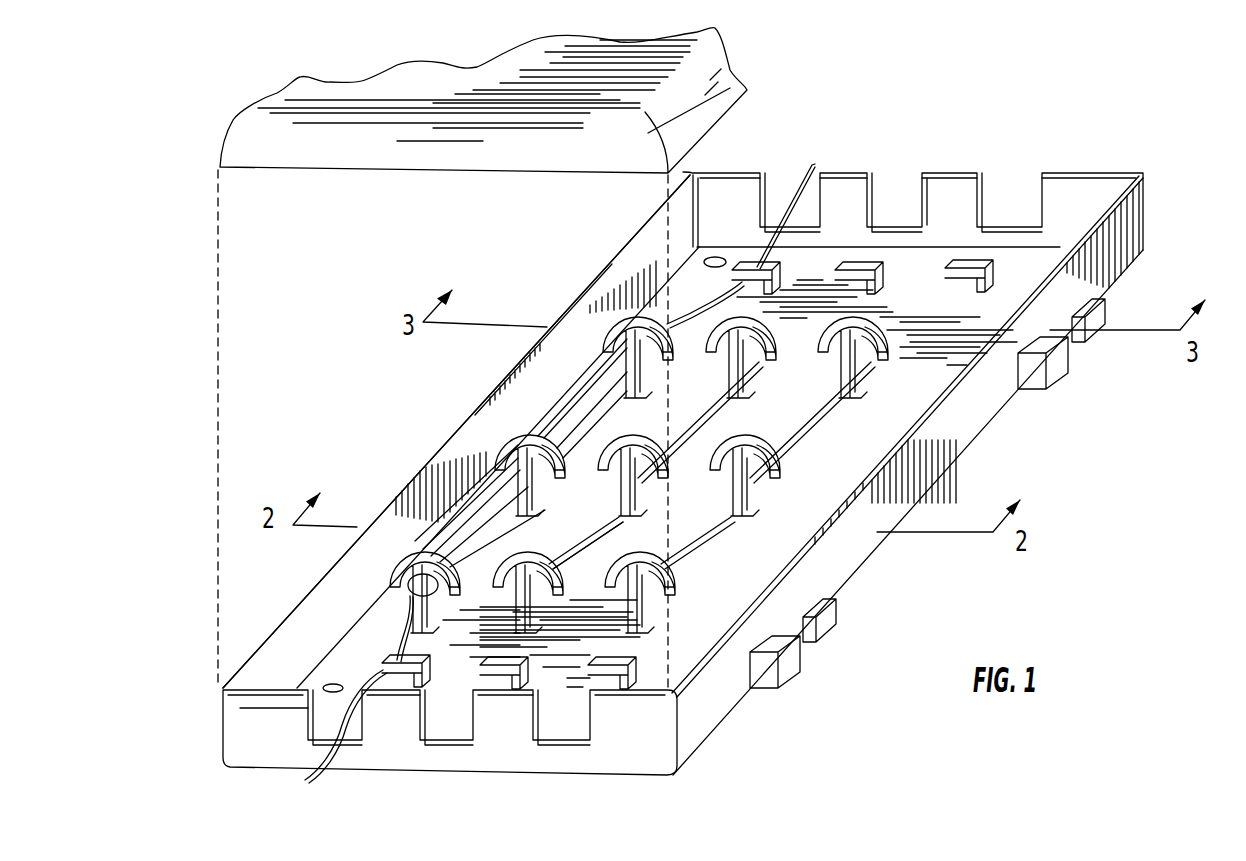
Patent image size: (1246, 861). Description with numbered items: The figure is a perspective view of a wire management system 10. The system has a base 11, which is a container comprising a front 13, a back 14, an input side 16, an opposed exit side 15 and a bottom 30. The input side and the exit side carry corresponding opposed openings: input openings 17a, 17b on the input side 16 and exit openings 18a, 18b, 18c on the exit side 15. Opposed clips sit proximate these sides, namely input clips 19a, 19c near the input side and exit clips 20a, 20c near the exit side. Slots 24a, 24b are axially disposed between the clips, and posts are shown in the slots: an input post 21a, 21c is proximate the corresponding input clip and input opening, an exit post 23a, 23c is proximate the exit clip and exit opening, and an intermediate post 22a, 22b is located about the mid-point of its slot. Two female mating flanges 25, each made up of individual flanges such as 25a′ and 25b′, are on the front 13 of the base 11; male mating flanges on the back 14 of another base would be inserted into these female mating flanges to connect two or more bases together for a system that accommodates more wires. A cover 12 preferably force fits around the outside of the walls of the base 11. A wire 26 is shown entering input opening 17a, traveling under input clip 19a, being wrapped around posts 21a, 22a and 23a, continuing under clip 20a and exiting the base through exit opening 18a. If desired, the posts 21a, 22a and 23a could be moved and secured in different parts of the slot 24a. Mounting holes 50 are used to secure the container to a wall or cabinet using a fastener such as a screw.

The wire management system 10 is at (992, 102).
The base 11 is at (1095, 168).
The cover 12 is at (306, 150).
The front 13 is at (687, 726).
The back 14 is at (327, 573).
The exit side 15 is at (949, 188).
The input side 16 is at (505, 747).
The input opening 17a is at (353, 727).
The input opening 17b is at (444, 720).
The exit opening 18a is at (780, 185).
The exit opening 18b is at (893, 188).
The exit opening 18c is at (1006, 188).
The input clip 19a is at (396, 661).
The input clip 19c is at (605, 660).
The exit clip 20a is at (750, 262).
The exit clip 20c is at (990, 266).
The input post 21a is at (420, 563).
The input post 21c is at (652, 597).
The intermediate post 22a is at (503, 447).
The intermediate post 22b is at (917, 482).
The exit post 23a is at (608, 321).
The exit post 23c is at (882, 347).
The slot 24a is at (468, 528).
The slot 24b is at (470, 540).
The female mating flange 25 is at (967, 507).
The individual flange 25a′ is at (763, 677).
The individual flange 25b′ is at (1037, 378).
The wire 26 is at (285, 708).
The bottom 30 is at (920, 310).
The mounting hole 50 is at (708, 258).